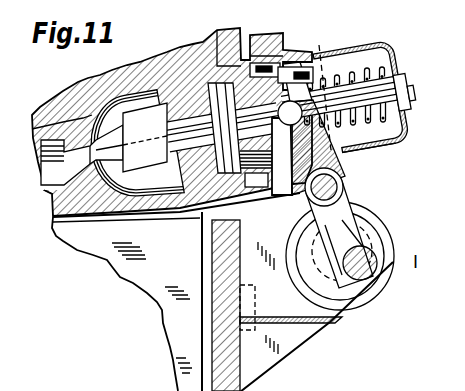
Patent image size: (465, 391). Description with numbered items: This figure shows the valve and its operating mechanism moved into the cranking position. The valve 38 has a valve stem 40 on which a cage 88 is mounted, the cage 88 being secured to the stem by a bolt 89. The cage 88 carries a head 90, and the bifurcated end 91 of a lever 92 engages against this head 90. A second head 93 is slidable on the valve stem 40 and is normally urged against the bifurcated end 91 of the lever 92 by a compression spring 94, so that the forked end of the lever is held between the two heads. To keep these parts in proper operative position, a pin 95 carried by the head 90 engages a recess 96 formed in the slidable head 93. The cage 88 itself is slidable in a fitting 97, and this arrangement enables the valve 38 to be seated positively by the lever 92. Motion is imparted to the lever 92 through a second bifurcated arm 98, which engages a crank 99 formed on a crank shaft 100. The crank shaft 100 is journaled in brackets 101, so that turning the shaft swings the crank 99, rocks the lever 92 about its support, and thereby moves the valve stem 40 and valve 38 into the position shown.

The valve 38 is at (106, 150).
The valve stem 40 is at (363, 95).
The cage 88 is at (378, 45).
The bolt 89 is at (413, 99).
The head 90 is at (224, 28).
The bifurcated end 91 is at (289, 108).
The lever 92 is at (343, 160).
The head 93 is at (384, 150).
The compression spring 94 is at (355, 147).
The pin 95 is at (280, 47).
The recess 96 is at (320, 46).
The fitting 97 is at (247, 58).
The second bifurcated arm 98 is at (381, 237).
The crank 99 is at (377, 273).
The crank shaft 100 is at (352, 228).
The brackets 101 is at (300, 346).